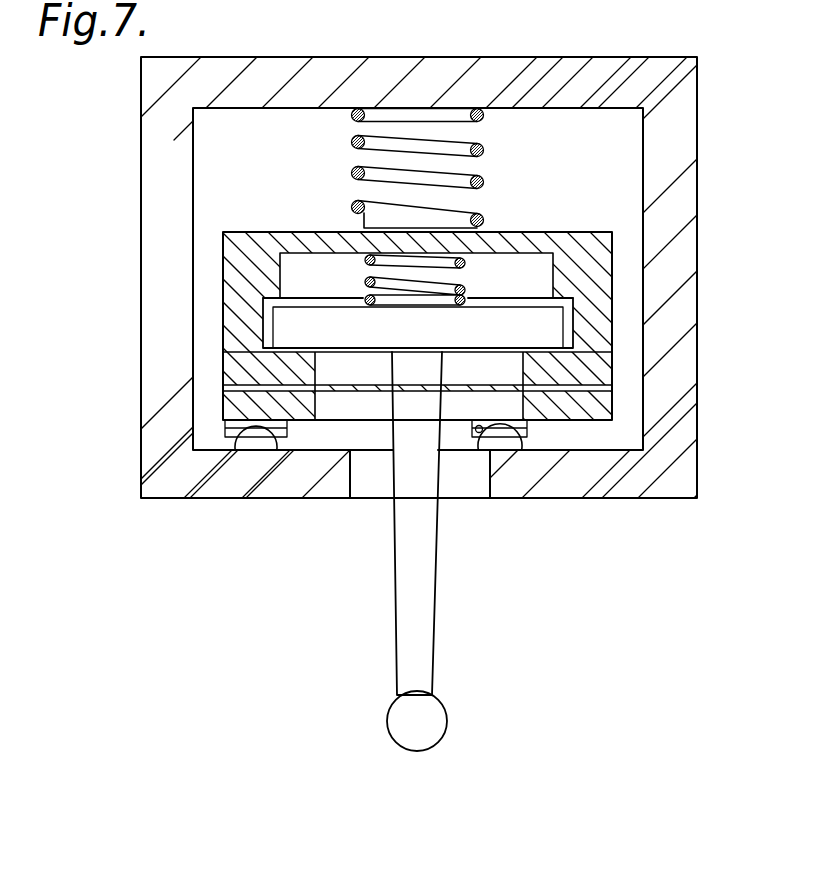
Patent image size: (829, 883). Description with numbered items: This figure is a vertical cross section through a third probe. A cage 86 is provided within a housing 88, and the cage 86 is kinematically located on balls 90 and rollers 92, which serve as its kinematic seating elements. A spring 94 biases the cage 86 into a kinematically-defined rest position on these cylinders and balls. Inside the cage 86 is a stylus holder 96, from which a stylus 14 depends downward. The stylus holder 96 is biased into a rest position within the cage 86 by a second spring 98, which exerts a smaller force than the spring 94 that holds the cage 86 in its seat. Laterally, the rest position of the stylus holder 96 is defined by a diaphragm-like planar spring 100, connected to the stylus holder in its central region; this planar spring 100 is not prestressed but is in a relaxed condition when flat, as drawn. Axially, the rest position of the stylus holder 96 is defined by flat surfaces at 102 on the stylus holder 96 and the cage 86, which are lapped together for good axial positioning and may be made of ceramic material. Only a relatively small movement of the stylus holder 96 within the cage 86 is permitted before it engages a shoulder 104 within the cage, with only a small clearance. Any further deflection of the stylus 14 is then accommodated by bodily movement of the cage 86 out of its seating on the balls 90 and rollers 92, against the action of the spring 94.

The stylus 14 is at (432, 598).
The cage 86 is at (575, 276).
The housing 88 is at (676, 299).
The balls 90 is at (246, 447).
The rollers 92 is at (230, 429).
The spring 94 is at (484, 186).
The stylus holder 96 is at (310, 317).
The spring 98 is at (466, 265).
The diaphragm-like planar spring 100 is at (462, 392).
The flat surfaces 102 is at (300, 336).
The shoulder 104 is at (252, 271).